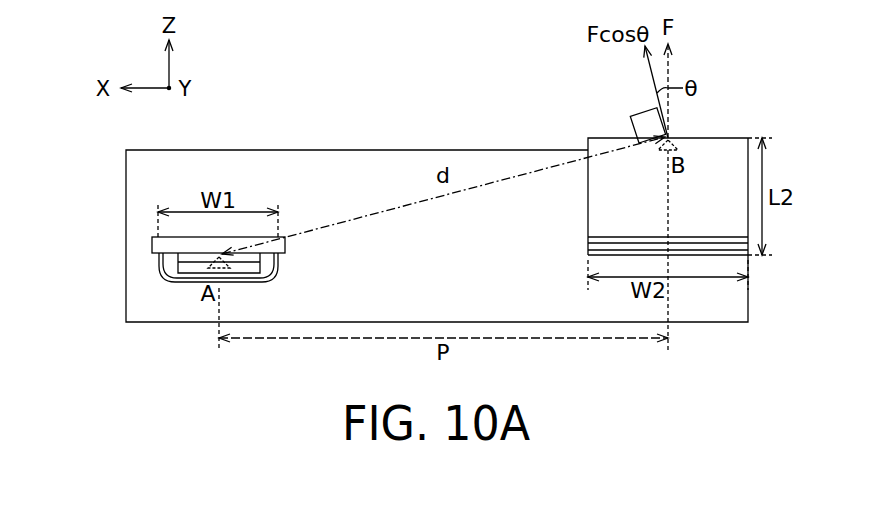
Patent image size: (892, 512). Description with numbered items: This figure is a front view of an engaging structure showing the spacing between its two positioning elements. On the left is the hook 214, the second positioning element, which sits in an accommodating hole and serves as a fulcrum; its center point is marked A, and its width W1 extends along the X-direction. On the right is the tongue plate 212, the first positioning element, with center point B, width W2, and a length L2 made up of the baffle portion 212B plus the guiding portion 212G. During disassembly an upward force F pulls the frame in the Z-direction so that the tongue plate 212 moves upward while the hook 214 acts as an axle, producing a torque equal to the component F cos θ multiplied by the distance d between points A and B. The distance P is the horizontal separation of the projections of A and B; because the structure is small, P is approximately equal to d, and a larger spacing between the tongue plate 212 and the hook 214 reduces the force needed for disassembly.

The hook 214 is at (160, 259).
The tongue plate 212 is at (669, 217).
The baffle portion 212B is at (586, 138).
The guiding portion 212G is at (586, 238).